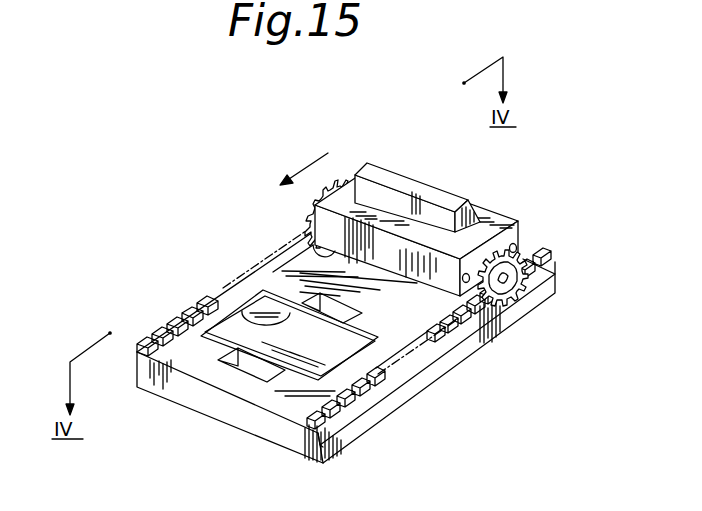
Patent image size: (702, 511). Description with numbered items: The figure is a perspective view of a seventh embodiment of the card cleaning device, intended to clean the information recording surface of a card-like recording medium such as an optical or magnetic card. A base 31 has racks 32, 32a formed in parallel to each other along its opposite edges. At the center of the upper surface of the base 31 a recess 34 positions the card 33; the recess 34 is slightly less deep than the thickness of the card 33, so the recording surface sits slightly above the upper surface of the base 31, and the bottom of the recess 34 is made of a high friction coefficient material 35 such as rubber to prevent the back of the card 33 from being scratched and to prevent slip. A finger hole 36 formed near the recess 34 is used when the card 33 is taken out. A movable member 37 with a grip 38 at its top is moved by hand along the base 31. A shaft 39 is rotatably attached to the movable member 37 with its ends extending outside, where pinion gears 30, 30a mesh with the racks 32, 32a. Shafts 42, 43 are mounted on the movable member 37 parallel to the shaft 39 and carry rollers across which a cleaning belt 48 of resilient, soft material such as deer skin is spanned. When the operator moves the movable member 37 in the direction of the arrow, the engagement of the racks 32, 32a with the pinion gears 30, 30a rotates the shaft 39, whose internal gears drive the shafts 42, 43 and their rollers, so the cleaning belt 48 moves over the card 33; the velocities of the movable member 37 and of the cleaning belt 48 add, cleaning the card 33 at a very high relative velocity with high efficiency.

The pinion gear 30 is at (338, 180).
The pinion gear 30a is at (501, 292).
The base 31 is at (264, 428).
The rack 32 is at (175, 336).
The rack 32a is at (372, 383).
The card 33 is at (232, 322).
The recess 34 is at (279, 287).
The high friction coefficient material 35 is at (240, 313).
The finger hole 36 is at (262, 376).
The movable member 37 is at (505, 217).
The grip 38 is at (413, 186).
The shaft 39 is at (536, 300).
The shaft 42 is at (463, 275).
The shaft 43 is at (523, 240).
The cleaning belt 48 is at (325, 262).